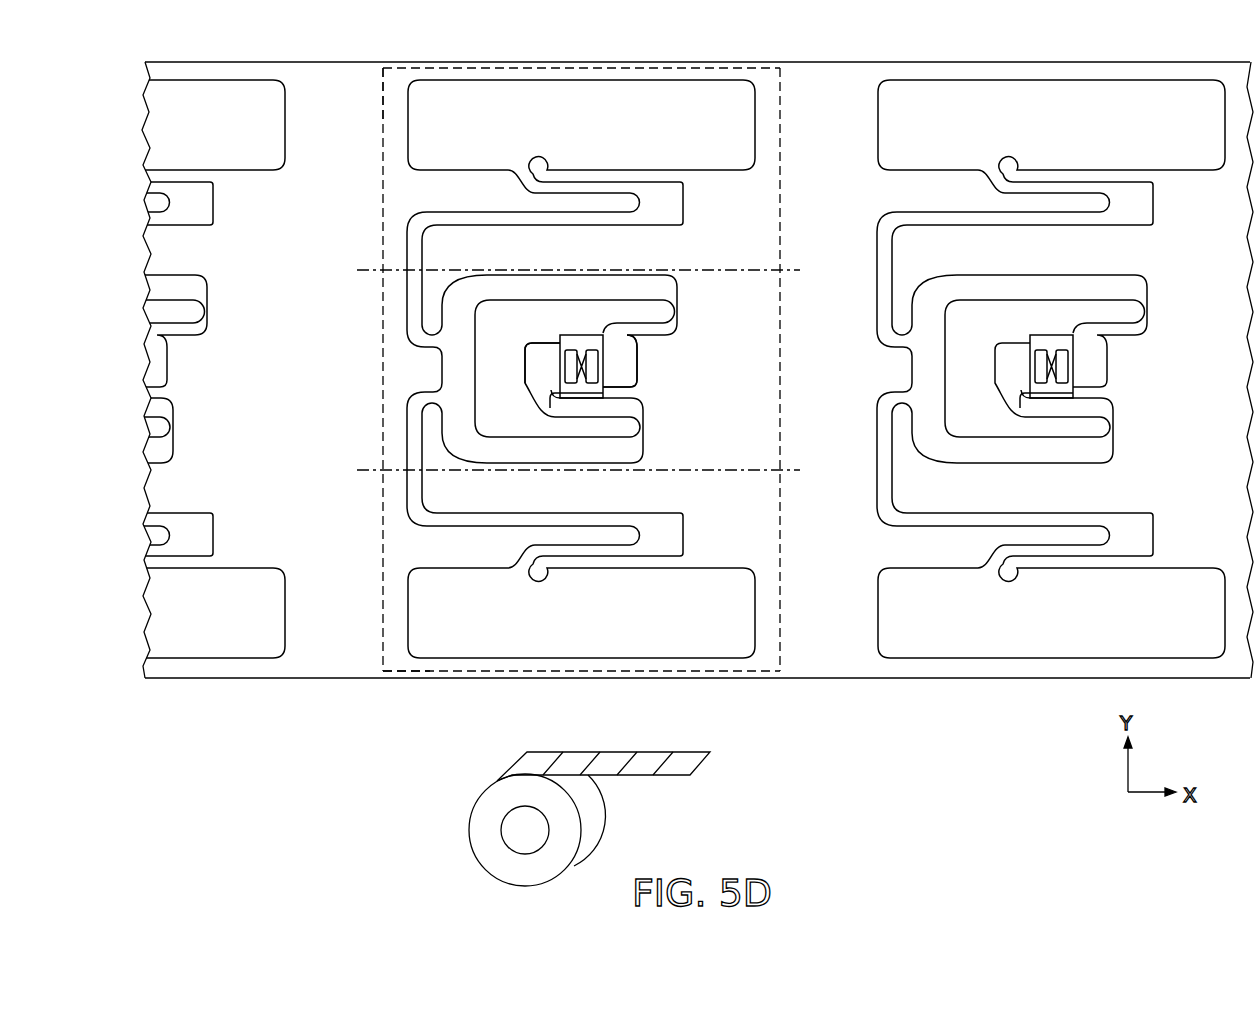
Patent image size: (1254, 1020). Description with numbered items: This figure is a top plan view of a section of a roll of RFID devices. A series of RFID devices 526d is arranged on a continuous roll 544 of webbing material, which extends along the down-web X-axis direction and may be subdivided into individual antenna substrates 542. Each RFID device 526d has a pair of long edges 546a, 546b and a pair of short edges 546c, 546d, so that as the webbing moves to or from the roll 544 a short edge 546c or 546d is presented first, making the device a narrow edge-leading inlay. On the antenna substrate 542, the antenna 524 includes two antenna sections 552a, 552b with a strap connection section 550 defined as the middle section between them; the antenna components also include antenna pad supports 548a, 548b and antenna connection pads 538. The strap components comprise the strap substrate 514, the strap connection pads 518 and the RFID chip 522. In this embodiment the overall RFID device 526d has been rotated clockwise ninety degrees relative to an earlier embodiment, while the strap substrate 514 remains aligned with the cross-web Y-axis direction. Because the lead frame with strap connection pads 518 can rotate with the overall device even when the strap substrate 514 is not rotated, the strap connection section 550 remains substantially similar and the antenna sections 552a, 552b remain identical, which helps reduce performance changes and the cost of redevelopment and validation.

The antenna substrate 542 is at (300, 87).
The antenna section 552a is at (376, 83).
The antenna section 552b is at (378, 659).
The antenna 524 is at (614, 90).
The long edge 546a is at (780, 370).
The long edge 546b is at (383, 370).
The short edge 546c is at (736, 62).
The short edge 546d is at (733, 678).
The antenna pad support 548a is at (668, 312).
The antenna pad support 548b is at (636, 427).
The strap substrate 514 is at (566, 358).
The strap connection pads 518 is at (598, 362).
The RFID chip 522 is at (581, 365).
The antenna connection pads 538 is at (634, 377).
The strap connection section 550 is at (365, 452).
The RFID device 526d is at (430, 676).
The roll 544 is at (470, 832).